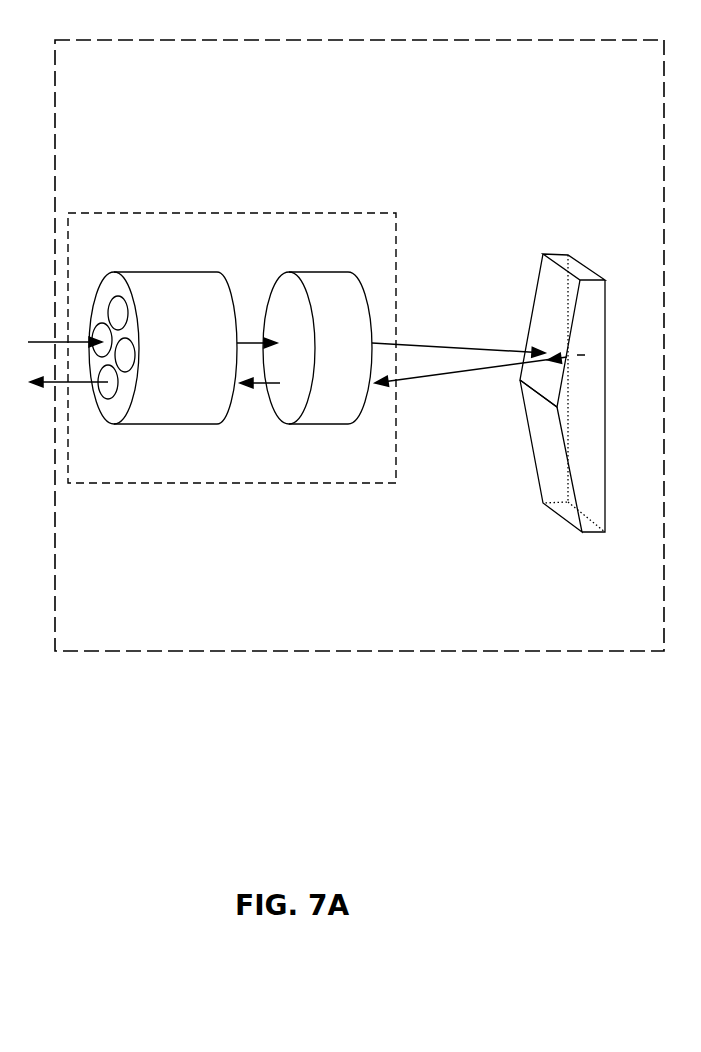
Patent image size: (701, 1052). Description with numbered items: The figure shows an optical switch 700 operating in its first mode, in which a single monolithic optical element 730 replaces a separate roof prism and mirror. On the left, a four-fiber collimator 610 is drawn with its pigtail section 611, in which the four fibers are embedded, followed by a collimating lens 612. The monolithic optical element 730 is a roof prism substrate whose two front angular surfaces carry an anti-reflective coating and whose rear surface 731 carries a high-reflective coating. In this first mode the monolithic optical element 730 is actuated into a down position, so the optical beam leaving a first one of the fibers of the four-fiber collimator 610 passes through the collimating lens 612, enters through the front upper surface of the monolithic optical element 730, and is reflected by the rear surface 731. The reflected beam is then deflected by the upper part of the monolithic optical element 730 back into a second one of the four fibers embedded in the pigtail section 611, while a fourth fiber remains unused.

The optical switch 700 is at (475, 651).
The four-fiber collimator 610 is at (211, 483).
The pigtail section 611 is at (160, 272).
The collimating lens 612 is at (320, 272).
The monolithic optical element 730 is at (562, 518).
The rear surface 731 is at (605, 337).